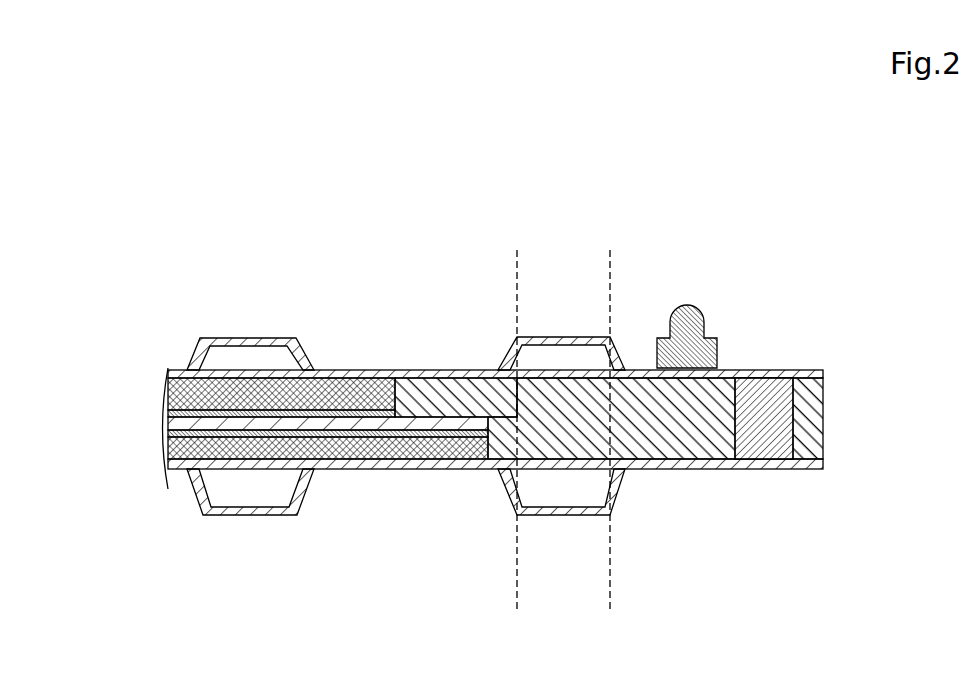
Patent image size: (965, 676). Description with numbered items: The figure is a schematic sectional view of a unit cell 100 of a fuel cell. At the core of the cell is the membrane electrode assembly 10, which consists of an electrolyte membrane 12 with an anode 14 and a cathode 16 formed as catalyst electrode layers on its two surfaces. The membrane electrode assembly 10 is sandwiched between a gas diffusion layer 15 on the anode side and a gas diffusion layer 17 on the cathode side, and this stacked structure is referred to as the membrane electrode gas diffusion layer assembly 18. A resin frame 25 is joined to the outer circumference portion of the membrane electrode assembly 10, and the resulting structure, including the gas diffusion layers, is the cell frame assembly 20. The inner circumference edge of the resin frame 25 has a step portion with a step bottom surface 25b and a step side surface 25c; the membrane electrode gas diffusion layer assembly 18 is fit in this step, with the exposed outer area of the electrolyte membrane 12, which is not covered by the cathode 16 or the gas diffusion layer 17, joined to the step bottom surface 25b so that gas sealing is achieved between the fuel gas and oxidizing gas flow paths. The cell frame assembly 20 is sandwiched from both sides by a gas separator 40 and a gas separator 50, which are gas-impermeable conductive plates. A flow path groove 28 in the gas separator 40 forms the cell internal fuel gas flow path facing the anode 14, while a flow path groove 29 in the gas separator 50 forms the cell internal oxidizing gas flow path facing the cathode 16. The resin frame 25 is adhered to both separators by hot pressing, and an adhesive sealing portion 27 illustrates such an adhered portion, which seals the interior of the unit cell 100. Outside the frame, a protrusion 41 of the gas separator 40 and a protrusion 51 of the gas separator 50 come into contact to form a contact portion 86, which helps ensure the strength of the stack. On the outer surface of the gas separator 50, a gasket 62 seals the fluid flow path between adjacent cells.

The unit cell 100 is at (203, 287).
The membrane electrode assembly 10 is at (118, 393).
The electrolyte membrane 12 is at (168, 424).
The anode 14 is at (168, 448).
The gas diffusion layer 15 is at (168, 466).
The cathode 16 is at (168, 412).
The gas diffusion layer 17 is at (168, 393).
The membrane electrode gas diffusion layer assembly 18 is at (82, 373).
The cell frame assembly 20 is at (890, 378).
The resin frame 25 is at (820, 416).
The step bottom surface 25b is at (442, 400).
The step side surface 25c is at (500, 428).
The adhesive sealing portion 27 is at (767, 392).
The flow path groove 28 is at (204, 496).
The flow path groove 29 is at (203, 355).
The gas separator 40 is at (170, 489).
The protrusion 41 is at (562, 510).
The gas separator 50 is at (162, 373).
The protrusion 51 is at (556, 337).
The gasket 62 is at (690, 307).
The contact portion 86 is at (608, 598).